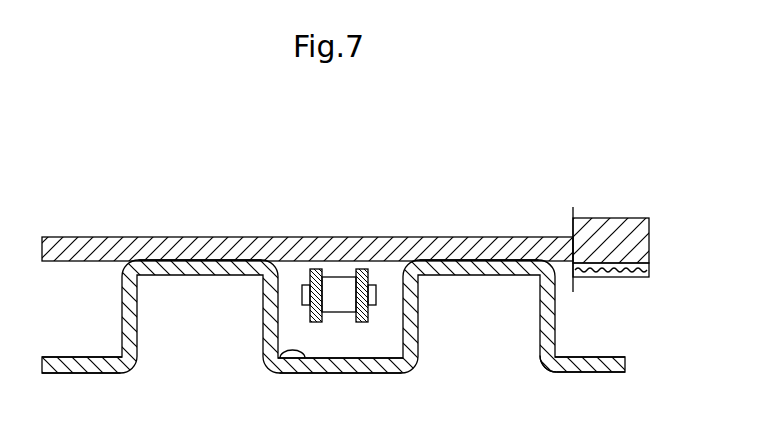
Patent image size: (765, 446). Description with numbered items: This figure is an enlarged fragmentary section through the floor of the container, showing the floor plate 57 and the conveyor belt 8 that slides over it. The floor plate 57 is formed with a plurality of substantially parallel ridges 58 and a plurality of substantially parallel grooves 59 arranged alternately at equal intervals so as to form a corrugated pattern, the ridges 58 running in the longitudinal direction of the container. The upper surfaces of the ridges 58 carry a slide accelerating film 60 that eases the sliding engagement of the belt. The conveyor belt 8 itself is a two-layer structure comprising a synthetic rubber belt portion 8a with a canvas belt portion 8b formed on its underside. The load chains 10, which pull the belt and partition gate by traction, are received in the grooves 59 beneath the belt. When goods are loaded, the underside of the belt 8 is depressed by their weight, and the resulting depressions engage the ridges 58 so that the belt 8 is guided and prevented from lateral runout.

The conveyor belt 8 is at (380, 237).
The synthetic rubber belt portion 8a is at (637, 236).
The canvas belt portion 8b is at (650, 272).
The load chains 10 is at (368, 315).
The floor plate 57 is at (548, 366).
The ridges 58 is at (195, 277).
The grooves 59 is at (75, 355).
The slide accelerating film 60 is at (205, 258).